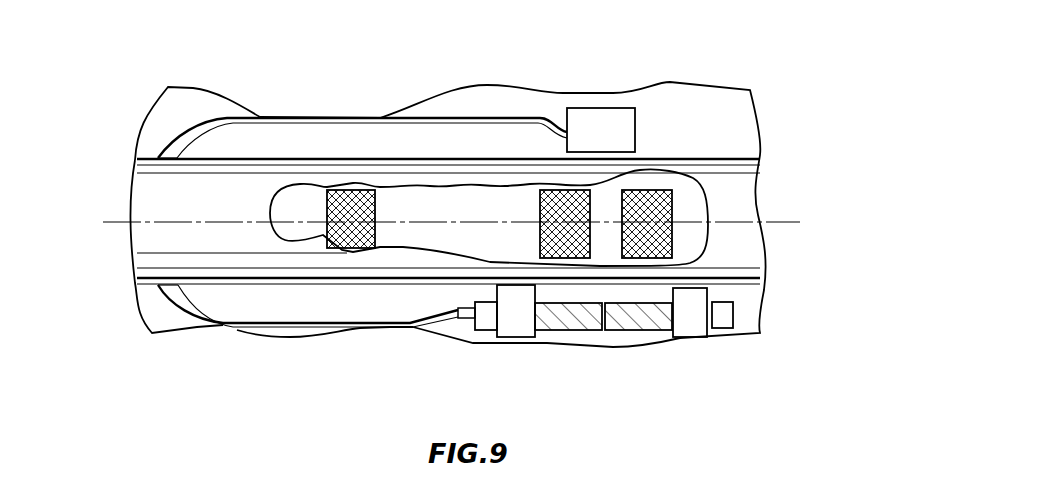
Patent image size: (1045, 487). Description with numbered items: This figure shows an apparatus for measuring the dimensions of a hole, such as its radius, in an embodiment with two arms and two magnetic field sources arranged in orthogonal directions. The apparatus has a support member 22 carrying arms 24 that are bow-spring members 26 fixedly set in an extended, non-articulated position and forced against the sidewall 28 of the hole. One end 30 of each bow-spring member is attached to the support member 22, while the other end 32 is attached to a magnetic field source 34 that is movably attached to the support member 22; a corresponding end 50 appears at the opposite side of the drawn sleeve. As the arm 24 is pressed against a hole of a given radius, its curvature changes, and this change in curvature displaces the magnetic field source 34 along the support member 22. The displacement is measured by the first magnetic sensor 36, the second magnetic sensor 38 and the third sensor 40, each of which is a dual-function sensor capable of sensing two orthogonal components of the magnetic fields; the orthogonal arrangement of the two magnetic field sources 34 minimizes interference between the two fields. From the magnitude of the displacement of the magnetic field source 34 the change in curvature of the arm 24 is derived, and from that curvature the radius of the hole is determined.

The support member 22 is at (183, 265).
The arm 24 is at (333, 112).
The bow-spring member 26 is at (208, 116).
The sidewall 28 is at (500, 82).
The one end of bow-spring member 30 is at (158, 156).
The other end of bow-spring member 32 is at (468, 320).
The magnetic field source 34 is at (619, 106).
The first magnetic sensor 36 is at (646, 243).
The second magnetic sensor 38 is at (566, 244).
The third sensor 40 is at (348, 248).
The lower sleeve end 50 is at (157, 289).